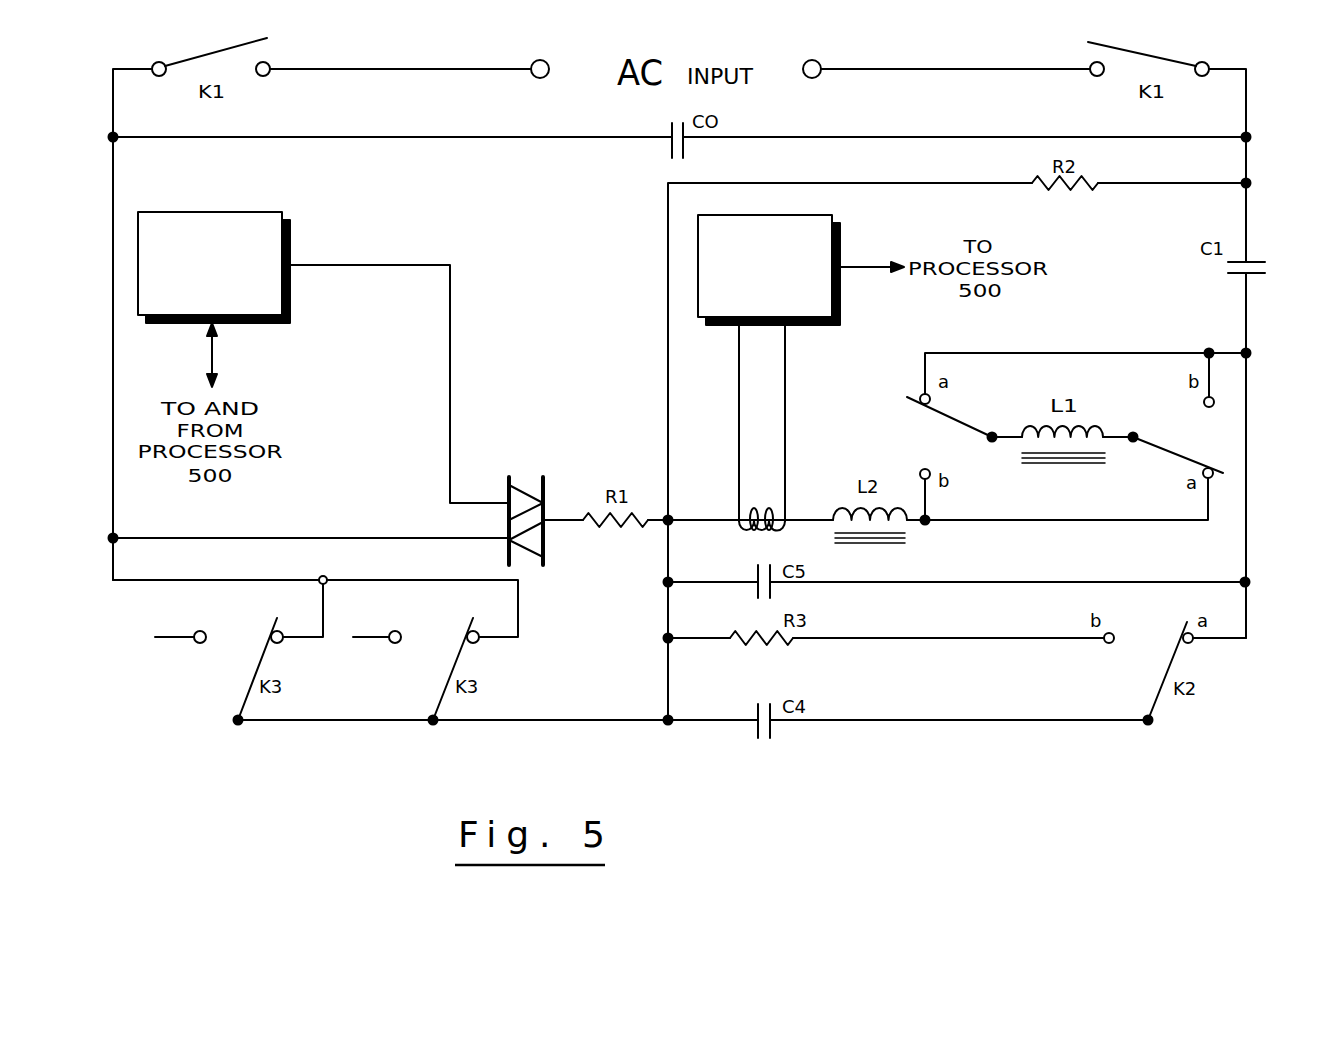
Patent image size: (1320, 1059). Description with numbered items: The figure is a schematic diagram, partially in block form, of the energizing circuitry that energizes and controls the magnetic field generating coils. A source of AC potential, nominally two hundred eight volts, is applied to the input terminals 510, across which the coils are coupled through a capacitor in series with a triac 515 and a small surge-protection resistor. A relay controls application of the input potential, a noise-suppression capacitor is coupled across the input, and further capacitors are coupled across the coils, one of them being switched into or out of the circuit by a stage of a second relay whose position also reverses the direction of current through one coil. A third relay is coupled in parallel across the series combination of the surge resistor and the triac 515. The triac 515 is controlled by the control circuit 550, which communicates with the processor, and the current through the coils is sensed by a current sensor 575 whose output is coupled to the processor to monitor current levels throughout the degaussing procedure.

The input terminals 510 is at (546, 62).
The control circuit 550 is at (256, 212).
The current sensor 575 is at (838, 218).
The triac 515 is at (527, 479).